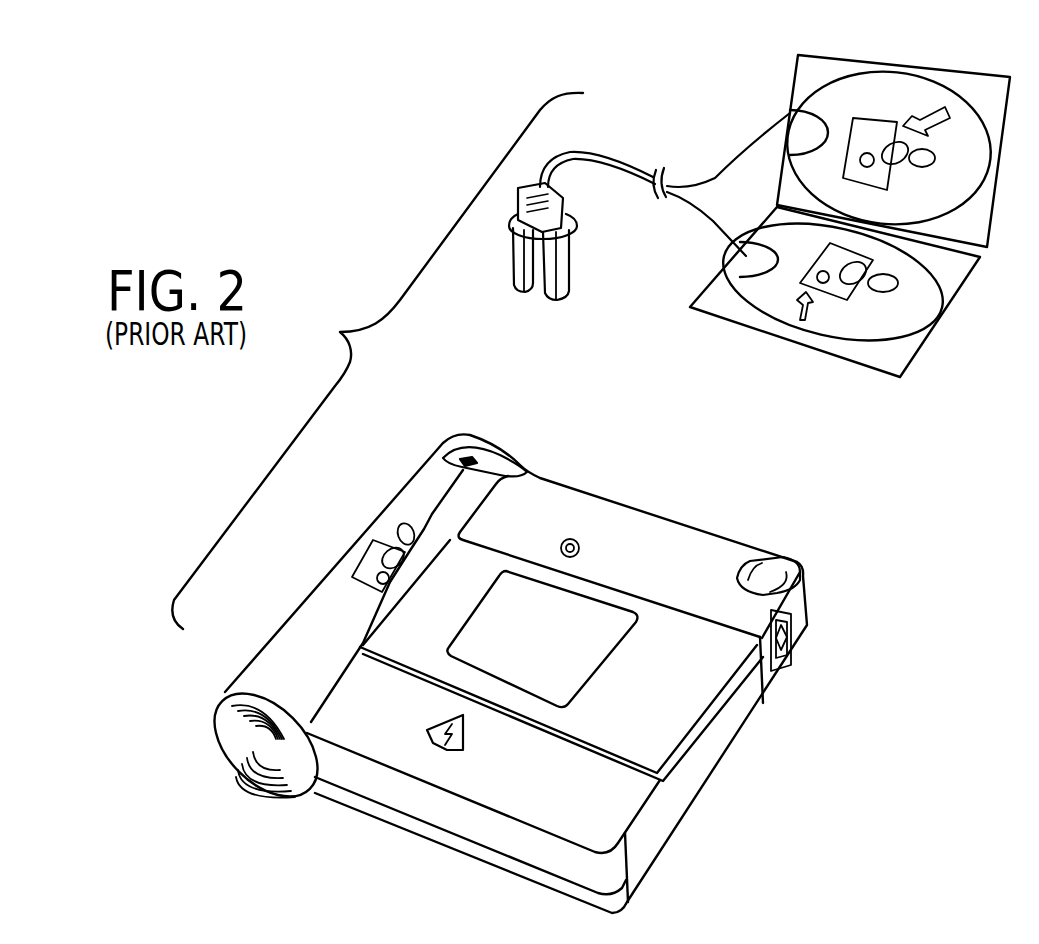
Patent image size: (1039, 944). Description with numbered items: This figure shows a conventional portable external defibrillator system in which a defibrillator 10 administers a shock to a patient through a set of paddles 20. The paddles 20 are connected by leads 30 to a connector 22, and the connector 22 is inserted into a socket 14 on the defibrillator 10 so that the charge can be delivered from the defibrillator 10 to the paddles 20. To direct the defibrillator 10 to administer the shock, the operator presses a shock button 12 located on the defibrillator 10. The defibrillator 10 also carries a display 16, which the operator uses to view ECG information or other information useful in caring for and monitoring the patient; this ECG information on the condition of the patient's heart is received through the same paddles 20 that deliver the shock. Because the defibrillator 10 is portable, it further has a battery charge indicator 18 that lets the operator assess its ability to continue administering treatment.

The defibrillator 10 is at (822, 723).
The shock button 12 is at (435, 737).
The socket 14 is at (478, 453).
The display 16 is at (583, 623).
The battery charge indicator 18 is at (768, 560).
The paddles 20 is at (923, 330).
The connector 22 is at (570, 263).
The leads 30 is at (627, 170).